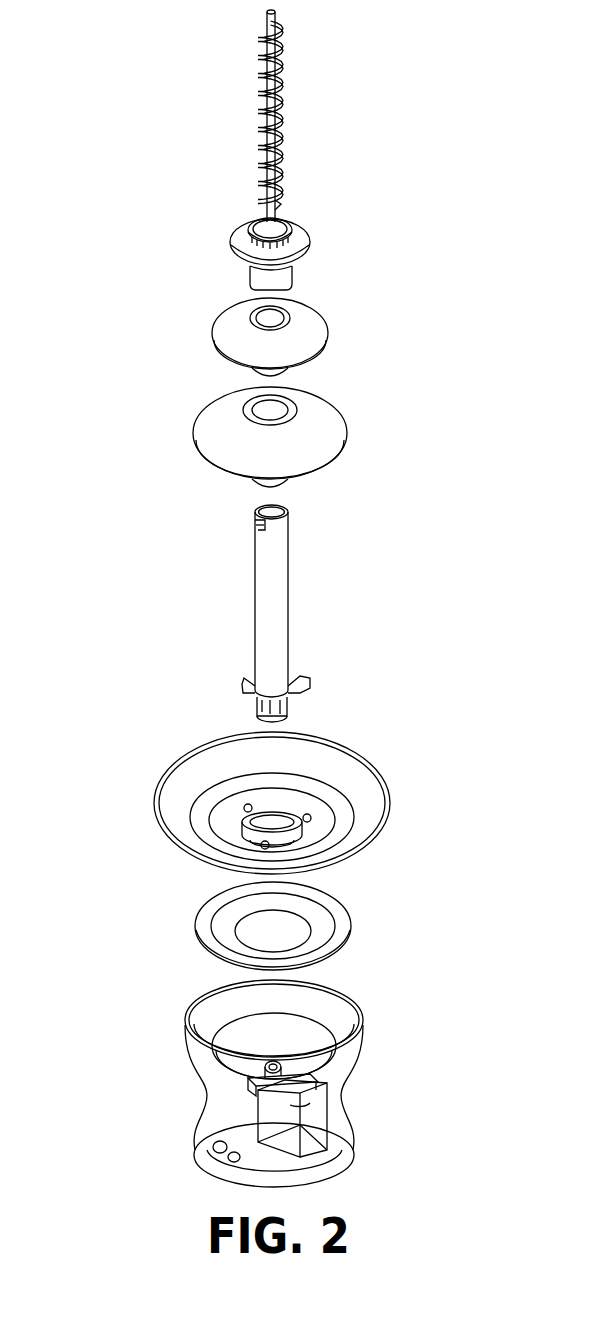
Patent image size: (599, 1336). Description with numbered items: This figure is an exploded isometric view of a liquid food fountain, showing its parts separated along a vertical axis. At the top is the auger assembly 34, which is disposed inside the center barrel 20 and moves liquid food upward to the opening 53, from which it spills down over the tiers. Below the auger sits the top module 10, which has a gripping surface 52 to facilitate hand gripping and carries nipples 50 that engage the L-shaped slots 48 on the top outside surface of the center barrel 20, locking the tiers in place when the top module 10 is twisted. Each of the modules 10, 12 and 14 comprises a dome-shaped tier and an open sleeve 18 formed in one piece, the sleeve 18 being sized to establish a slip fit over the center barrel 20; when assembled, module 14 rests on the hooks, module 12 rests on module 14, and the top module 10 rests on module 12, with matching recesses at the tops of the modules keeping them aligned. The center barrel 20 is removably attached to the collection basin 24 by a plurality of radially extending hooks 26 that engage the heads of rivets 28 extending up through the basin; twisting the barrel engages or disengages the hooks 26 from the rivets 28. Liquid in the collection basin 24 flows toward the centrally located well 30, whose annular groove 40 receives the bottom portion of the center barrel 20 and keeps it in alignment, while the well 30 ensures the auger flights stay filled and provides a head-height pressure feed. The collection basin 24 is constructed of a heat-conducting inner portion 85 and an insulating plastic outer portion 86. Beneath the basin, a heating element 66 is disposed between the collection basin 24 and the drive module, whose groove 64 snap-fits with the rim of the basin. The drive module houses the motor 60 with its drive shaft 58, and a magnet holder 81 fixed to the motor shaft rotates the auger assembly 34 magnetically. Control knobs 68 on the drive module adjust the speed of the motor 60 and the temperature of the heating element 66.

The top module 10 is at (228, 221).
The module 12 is at (269, 321).
The module 14 is at (289, 437).
The open sleeve 18 is at (262, 283).
The center barrel 20 is at (268, 603).
The collection basin 24 is at (277, 732).
The radially extending hooks 26 is at (245, 673).
The rivets 28 is at (245, 808).
The well 30 is at (296, 815).
The auger assembly 34 is at (298, 97).
The annular groove 40 is at (272, 828).
The L-shaped slots 48 is at (255, 528).
The nipples 50 is at (317, 193).
The gripping surface 52 is at (298, 225).
The opening 53 is at (290, 503).
The drive shaft 58 is at (279, 1049).
The motor 60 is at (320, 1115).
The groove 64 is at (278, 1077).
The heating element 66 is at (195, 922).
The control knobs 68 is at (205, 1148).
The magnet holder 81 is at (275, 1068).
The inner portion 85 is at (330, 843).
The outer portion 86 is at (375, 810).